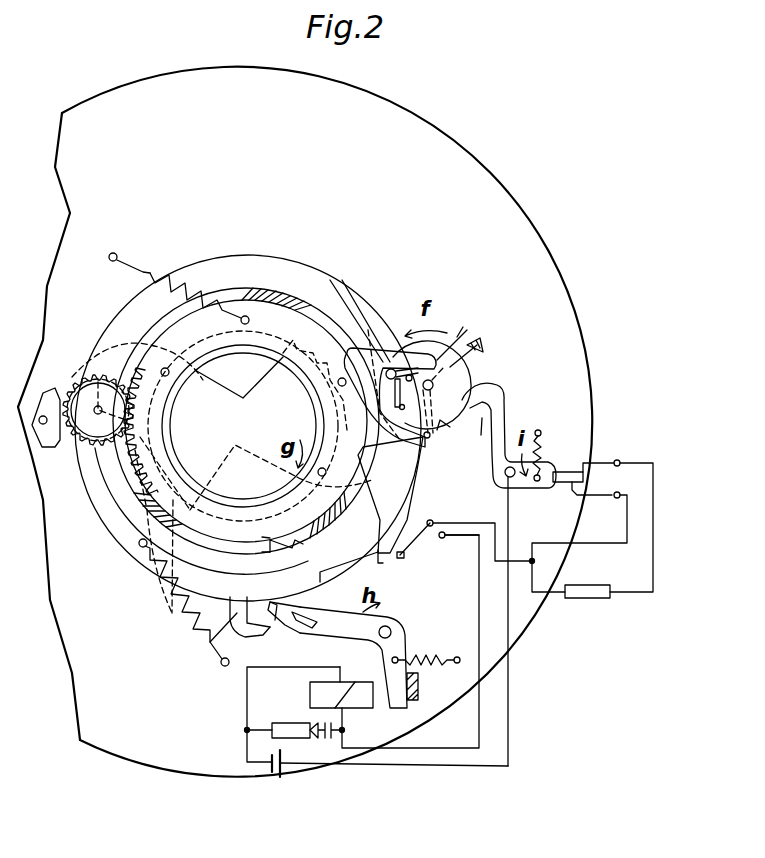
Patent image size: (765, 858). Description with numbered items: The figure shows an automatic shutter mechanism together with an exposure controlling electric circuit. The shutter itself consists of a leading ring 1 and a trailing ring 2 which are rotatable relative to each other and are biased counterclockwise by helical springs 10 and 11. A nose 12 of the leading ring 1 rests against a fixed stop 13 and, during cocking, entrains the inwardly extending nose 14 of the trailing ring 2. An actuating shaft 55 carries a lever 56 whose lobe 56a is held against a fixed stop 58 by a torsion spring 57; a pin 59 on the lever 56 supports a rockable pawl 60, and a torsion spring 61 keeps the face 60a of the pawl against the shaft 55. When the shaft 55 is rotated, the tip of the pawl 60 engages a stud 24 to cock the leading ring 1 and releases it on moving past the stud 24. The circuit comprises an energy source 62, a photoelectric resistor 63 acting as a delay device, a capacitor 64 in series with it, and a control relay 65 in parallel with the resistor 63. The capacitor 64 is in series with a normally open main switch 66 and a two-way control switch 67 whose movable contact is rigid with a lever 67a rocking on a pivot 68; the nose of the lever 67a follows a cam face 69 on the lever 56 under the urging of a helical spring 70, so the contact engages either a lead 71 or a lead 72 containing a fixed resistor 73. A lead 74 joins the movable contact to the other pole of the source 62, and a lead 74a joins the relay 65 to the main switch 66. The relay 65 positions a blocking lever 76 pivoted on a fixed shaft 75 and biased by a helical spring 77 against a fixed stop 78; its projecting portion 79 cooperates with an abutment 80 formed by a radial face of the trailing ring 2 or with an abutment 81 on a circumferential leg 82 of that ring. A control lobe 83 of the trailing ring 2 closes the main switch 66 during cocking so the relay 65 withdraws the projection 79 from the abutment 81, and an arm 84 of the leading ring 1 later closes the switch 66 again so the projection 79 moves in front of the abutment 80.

The leading ring 1 is at (262, 296).
The trailing ring 2 is at (300, 264).
The helical spring 10 is at (150, 272).
The helical spring 11 is at (174, 606).
The nose 12 is at (305, 538).
The fixed stop 13 is at (320, 514).
The nose 14 is at (272, 540).
The stud 24 is at (338, 384).
The actuating shaft 55 is at (465, 376).
The lever 56 is at (443, 340).
The lobe 56a is at (463, 327).
The torsion spring 57 is at (433, 438).
The fixed stop 58 is at (482, 347).
The pin 59 is at (383, 345).
The rockable pawl 60 is at (362, 343).
The face 60a is at (462, 333).
The torsion spring 61 is at (393, 367).
The source of electrical energy 62 is at (282, 770).
The photoelectric resistor 63 is at (285, 722).
The capacitor 64 is at (344, 729).
The control relay 65 is at (350, 681).
The main switch 66 is at (423, 540).
The two-way control switch 67 is at (566, 465).
The lever 67a is at (504, 402).
The pivot 68 is at (506, 476).
The cam face 69 is at (481, 435).
The helical spring 70 is at (542, 441).
The lead 71 is at (570, 543).
The lead 72 is at (622, 596).
The fixed resistor 73 is at (583, 600).
The lead 74 is at (507, 623).
The lead 74a is at (478, 723).
The fixed shaft 75 is at (392, 628).
The blocking lever 76 is at (340, 623).
The helical spring 77 is at (420, 656).
The fixed stop 78 is at (419, 688).
The projecting portion 79 is at (274, 627).
The abutment 80 is at (322, 582).
The abutment 81 is at (304, 625).
The leg 82 is at (209, 643).
The control lobe 83 is at (375, 550).
The arm 84 is at (420, 473).